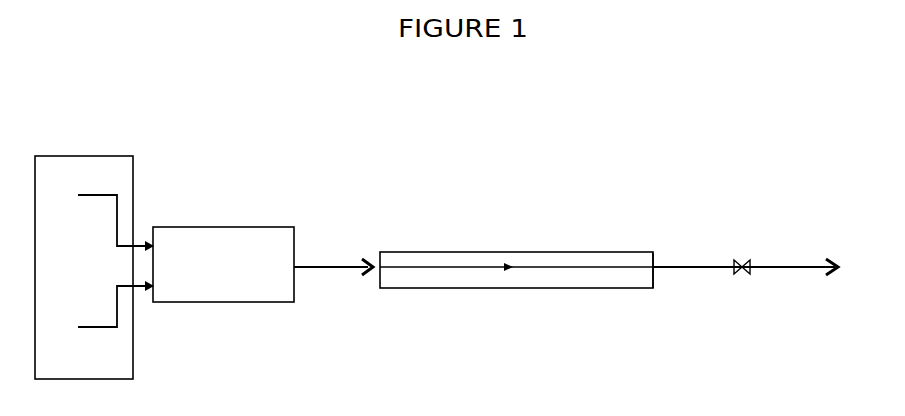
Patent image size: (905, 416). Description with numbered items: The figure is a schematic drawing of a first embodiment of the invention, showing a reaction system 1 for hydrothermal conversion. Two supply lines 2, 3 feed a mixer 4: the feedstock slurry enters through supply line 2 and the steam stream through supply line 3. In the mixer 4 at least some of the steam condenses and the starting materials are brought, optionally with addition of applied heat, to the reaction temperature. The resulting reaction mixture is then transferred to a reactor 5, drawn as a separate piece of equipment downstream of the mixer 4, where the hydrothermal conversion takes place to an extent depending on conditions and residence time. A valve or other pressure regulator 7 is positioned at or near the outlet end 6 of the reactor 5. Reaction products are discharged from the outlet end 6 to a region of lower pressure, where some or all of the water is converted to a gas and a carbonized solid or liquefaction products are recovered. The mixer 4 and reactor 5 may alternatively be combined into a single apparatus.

The reaction system 1 is at (587, 196).
The supply line 2 is at (100, 208).
The supply line 3 is at (91, 335).
The mixer 4 is at (223, 264).
The reactor 5 is at (440, 283).
The outlet end 6 is at (657, 282).
The valve or other pressure regulator 7 is at (749, 273).